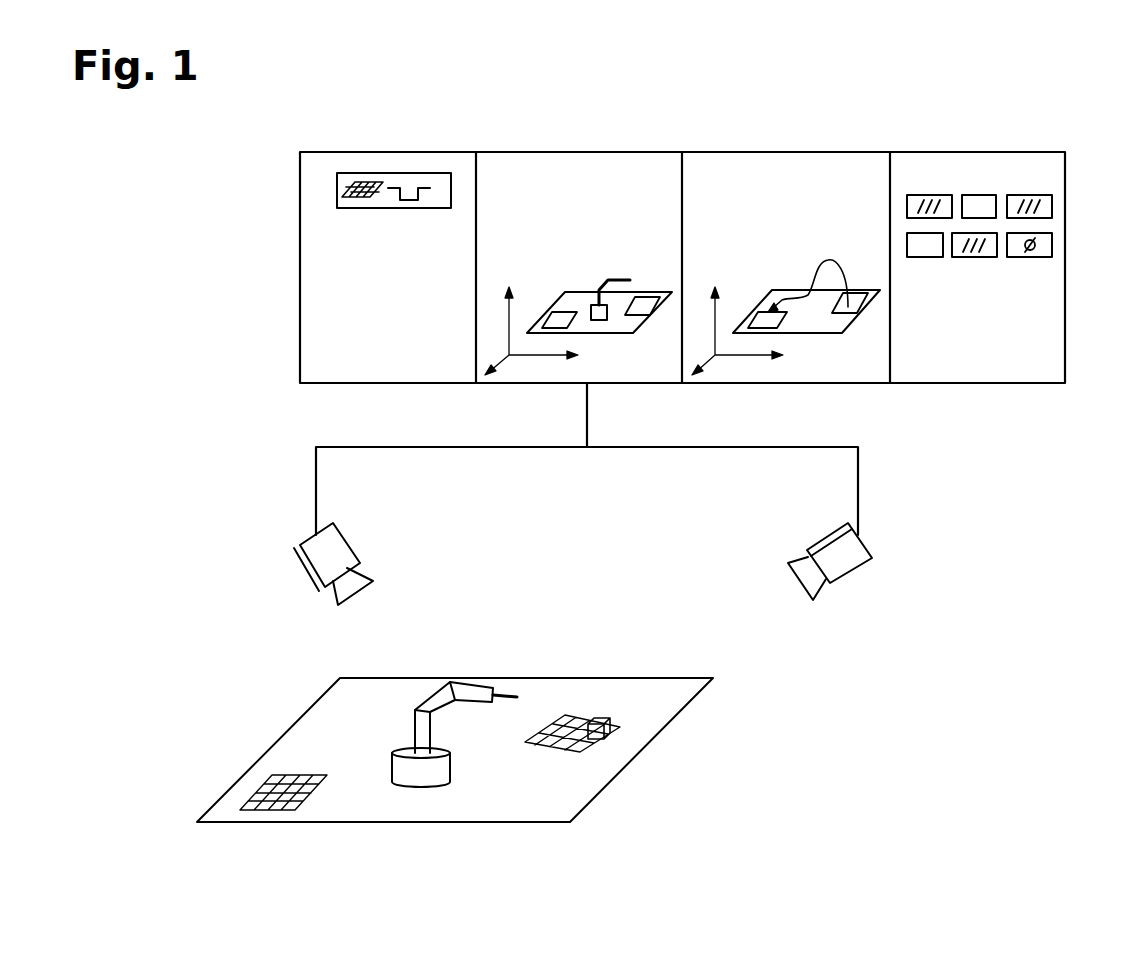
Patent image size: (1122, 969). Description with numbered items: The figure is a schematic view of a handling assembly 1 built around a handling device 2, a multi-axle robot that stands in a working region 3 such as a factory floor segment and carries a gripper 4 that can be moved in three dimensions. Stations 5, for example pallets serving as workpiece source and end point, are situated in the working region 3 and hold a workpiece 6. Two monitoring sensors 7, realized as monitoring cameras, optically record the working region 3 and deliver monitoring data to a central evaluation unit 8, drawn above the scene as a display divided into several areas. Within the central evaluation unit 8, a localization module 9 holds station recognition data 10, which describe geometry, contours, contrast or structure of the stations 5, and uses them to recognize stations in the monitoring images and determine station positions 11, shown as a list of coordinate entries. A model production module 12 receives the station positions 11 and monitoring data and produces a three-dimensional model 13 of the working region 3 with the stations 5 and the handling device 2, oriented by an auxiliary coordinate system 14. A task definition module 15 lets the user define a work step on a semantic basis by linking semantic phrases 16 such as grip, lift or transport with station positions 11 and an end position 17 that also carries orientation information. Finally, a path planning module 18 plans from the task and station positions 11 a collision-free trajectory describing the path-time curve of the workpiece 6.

The handling assembly 1 is at (150, 176).
The handling device 2 is at (390, 716).
The working region 3 is at (662, 603).
The gripper 4 is at (510, 687).
The stations 5 is at (262, 783).
The workpiece 6 is at (598, 717).
The monitoring sensors 7 is at (348, 540).
The central evaluation unit 8 is at (300, 190).
The localization module 9 is at (316, 163).
The station recognition data 10 is at (440, 183).
The station positions 11 is at (320, 240).
The model production module 12 is at (512, 163).
The model 13 is at (603, 248).
The auxiliary coordinate system 14 is at (512, 315).
The task definition module 15 is at (918, 163).
The semantic phrases 16 is at (930, 195).
The end position 17 is at (1028, 257).
The path planning module 18 is at (748, 163).